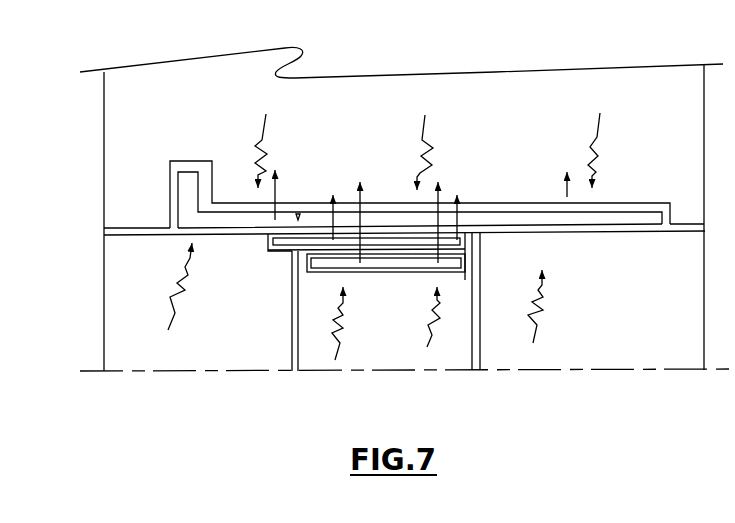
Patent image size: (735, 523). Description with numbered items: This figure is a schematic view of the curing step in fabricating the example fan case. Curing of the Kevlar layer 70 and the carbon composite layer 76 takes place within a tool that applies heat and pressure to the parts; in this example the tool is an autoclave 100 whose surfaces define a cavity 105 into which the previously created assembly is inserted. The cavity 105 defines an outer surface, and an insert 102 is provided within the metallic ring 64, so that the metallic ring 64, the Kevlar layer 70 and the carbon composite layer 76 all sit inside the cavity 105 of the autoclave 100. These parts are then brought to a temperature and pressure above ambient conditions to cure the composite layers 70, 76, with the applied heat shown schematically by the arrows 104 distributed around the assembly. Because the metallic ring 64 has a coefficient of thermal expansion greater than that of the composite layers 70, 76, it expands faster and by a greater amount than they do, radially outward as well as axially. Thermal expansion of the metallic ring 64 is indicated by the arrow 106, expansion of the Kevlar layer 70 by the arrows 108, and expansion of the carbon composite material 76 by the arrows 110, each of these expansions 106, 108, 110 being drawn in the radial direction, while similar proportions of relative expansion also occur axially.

The autoclave 100 is at (133, 110).
The insert 102 is at (388, 345).
The arrows indicating heat 104 is at (267, 118).
The cavity 105 is at (205, 163).
The arrow indicating thermal expansion of the metallic ring 106 is at (360, 222).
The arrows indicating expansion of the Kevlar layer 108 is at (338, 222).
The arrows indicating expansion of the carbon composite layer 110 is at (277, 192).
The metallic ring 64 is at (400, 262).
The Kevlar layer 70 is at (297, 242).
The carbon composite layer 76 is at (298, 220).